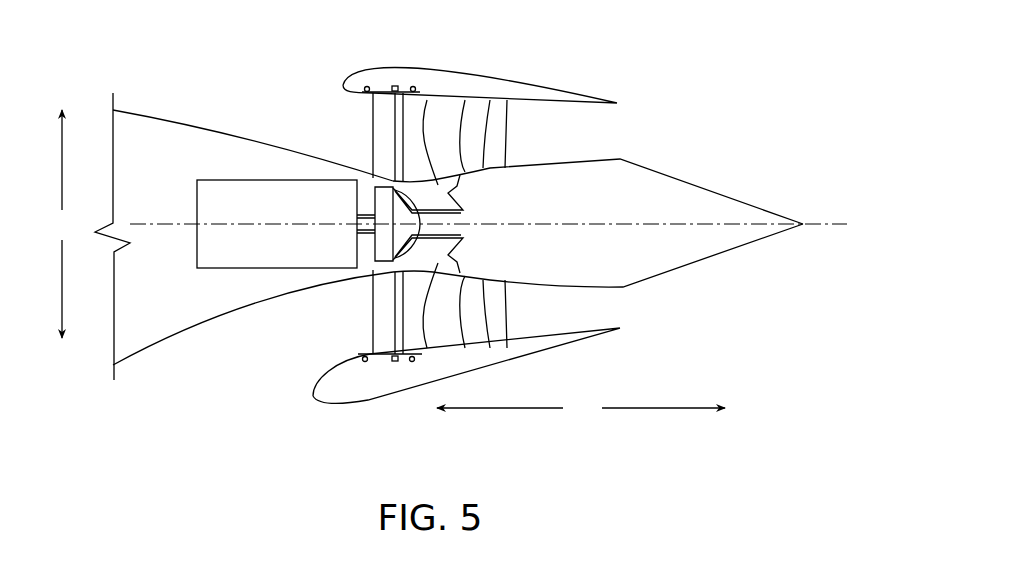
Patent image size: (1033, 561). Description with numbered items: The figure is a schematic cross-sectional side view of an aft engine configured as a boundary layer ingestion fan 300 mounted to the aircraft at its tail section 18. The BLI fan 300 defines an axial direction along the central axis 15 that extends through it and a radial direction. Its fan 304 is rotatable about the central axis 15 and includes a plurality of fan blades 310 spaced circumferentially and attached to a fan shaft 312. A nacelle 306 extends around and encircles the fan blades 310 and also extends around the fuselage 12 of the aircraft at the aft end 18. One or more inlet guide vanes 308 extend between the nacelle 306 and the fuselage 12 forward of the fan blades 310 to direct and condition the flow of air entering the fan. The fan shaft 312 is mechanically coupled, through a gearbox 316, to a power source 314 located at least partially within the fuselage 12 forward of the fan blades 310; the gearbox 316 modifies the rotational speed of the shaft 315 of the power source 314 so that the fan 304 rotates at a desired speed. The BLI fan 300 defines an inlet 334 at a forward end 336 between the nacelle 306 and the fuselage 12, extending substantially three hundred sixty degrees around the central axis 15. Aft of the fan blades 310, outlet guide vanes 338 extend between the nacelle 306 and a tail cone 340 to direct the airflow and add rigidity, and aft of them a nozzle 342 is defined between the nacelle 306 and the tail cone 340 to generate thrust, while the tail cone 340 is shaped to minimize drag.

The boundary layer ingestion fan 300 is at (690, 40).
The fuselage 12 is at (155, 118).
The tail section 18 is at (226, 118).
The central axis 15 is at (568, 223).
The power source 314 is at (295, 180).
The nacelle 306 is at (455, 97).
The inlet guide vanes 308 is at (367, 117).
The gearbox 316 is at (372, 190).
The shaft 315 is at (367, 250).
The fan shaft 312 is at (462, 215).
The fan 304 is at (445, 113).
The fan blades 310 is at (470, 125).
The outlet guide vanes 338 is at (504, 303).
The tail cone 340 is at (658, 170).
The nozzle 342 is at (604, 137).
The inlet 334 is at (367, 322).
The forward end 336 is at (310, 403).